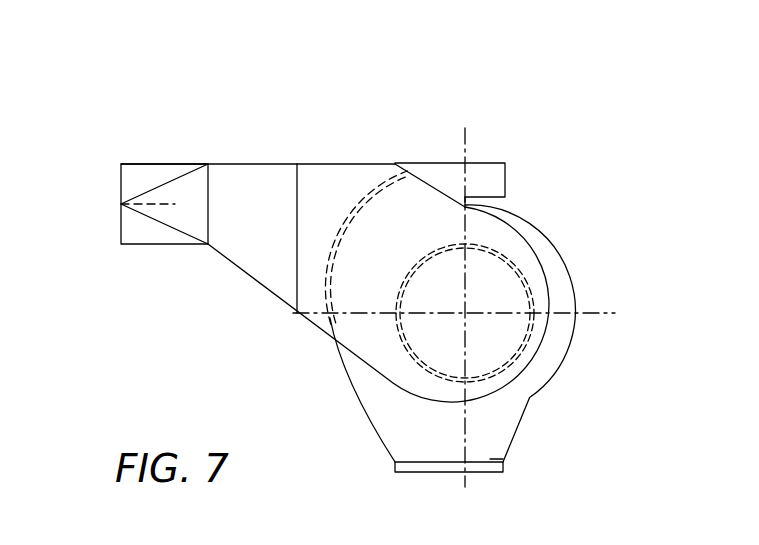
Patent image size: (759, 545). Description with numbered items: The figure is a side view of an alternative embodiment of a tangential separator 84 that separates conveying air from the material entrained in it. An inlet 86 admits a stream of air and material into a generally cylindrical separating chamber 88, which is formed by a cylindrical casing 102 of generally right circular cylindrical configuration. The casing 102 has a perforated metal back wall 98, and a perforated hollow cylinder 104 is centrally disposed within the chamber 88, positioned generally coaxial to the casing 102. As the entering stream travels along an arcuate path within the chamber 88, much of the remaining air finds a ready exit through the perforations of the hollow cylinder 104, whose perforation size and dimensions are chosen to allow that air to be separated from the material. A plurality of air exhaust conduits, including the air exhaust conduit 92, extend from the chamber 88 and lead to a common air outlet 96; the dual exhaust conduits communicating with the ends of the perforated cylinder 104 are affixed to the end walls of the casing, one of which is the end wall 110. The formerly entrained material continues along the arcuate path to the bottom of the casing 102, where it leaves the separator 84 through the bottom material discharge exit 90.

The tangential separator 84 is at (578, 62).
The inlet 86 is at (505, 173).
The separating chamber 88 is at (396, 263).
The material discharge exit 90 is at (395, 473).
The air exhaust conduit 92 is at (365, 180).
The air outlet 96 is at (122, 204).
The perforated metal back wall 98 is at (360, 205).
The cylindrical casing 102 is at (392, 408).
The perforated hollow cylinder 104 is at (512, 370).
The end wall 110 is at (503, 459).